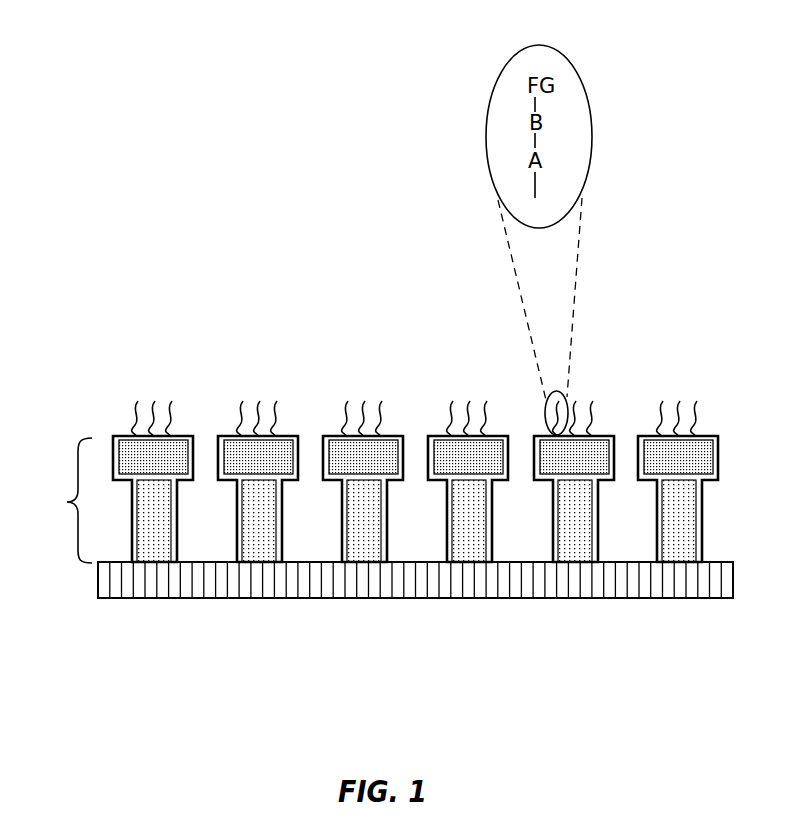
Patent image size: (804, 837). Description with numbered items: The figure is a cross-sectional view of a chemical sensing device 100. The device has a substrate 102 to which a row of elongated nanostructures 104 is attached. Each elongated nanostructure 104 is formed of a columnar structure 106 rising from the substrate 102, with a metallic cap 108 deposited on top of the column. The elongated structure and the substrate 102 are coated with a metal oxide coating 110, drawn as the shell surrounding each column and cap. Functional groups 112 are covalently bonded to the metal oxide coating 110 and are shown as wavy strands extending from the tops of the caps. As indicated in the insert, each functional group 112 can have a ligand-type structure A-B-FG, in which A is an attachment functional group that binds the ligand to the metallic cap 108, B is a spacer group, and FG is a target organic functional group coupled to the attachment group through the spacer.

The chemical sensing device 100 is at (65, 37).
The substrate 102 is at (215, 588).
The elongated nanostructure 104 is at (369, 470).
The columnar structure 106 is at (257, 535).
The metallic cap 108 is at (240, 452).
The metal oxide coating 110 is at (218, 457).
The functional groups 112 is at (431, 393).